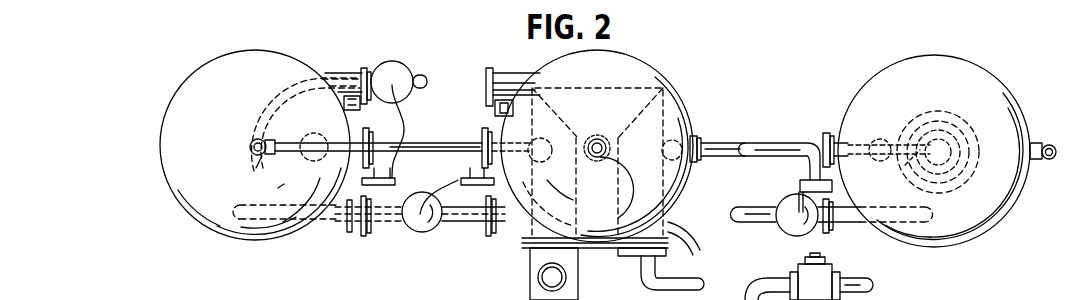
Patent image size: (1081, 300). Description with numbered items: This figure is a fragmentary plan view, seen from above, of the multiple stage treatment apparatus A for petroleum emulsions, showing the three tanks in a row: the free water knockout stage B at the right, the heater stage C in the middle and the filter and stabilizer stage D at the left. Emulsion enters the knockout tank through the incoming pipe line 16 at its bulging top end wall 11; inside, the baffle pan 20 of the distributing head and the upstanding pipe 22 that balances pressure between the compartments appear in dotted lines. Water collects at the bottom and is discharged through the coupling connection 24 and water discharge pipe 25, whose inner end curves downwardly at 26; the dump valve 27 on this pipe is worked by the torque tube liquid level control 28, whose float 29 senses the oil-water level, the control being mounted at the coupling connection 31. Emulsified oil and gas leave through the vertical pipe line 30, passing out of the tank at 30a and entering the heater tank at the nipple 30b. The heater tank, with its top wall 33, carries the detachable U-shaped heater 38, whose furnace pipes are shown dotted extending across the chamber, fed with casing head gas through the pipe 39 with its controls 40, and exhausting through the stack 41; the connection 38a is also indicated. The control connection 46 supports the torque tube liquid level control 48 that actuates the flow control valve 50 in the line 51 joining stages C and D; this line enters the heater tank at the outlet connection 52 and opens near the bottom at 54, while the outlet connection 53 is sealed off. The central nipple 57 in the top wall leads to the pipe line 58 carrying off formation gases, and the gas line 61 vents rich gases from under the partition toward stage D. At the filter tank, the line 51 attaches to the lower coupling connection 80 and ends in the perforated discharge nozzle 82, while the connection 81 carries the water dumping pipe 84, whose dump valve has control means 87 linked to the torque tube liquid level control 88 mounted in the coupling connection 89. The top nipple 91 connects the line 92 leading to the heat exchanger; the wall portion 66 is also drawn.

The multiple stage treatment apparatus A is at (187, 68).
The free water knockout stage B is at (947, 68).
The heater stage C is at (606, 64).
The filter and stabilizer stage D is at (254, 62).
The top end wall 11 is at (985, 88).
The incoming pipe line 16 is at (1051, 146).
The baffle pan 20 is at (970, 120).
The upstanding pipe 22 is at (880, 135).
The coupling connection 24 is at (850, 224).
The water discharge pipe 25 is at (752, 224).
The downwardly curving inner end 26 is at (914, 215).
The dump valve 27 is at (786, 232).
The torque tube liquid level control 28 is at (800, 186).
The float 29 is at (921, 166).
The pipe line 30 is at (889, 164).
The pipe line connection 30a is at (786, 146).
The nipple 30b is at (700, 140).
The coupling connection 31 is at (833, 133).
The top wall 33 is at (695, 122).
The U-shaped heater 38 is at (652, 84).
The connection 38a is at (497, 109).
The fuel pipe 39 is at (696, 280).
The controls 40 is at (314, 136).
The stack 41 is at (579, 276).
The tubular flanged control connection 46 is at (482, 134).
The torque tube liquid level control 48 is at (452, 180).
The flow control valve 50 is at (421, 232).
The line 51 is at (470, 222).
The outlet connection 52 is at (508, 228).
The outlet connection 53 is at (508, 80).
The downturned opening 54 is at (576, 178).
The central nipple 57 is at (612, 152).
The pipe line 58 is at (597, 139).
The gas line 61 is at (430, 143).
The housing 66 is at (183, 182).
The lower pipe coupling connection 80 is at (351, 222).
The lower pipe coupling connection 81 is at (356, 72).
The perforated discharge nozzle 82 is at (256, 196).
The water dumping pipe 84 is at (369, 70).
The control means 87 is at (400, 76).
The torque tube liquid level control 88 is at (378, 186).
The coupling connection 89 is at (357, 143).
The top nipple 91 is at (258, 168).
The line 92 is at (250, 150).